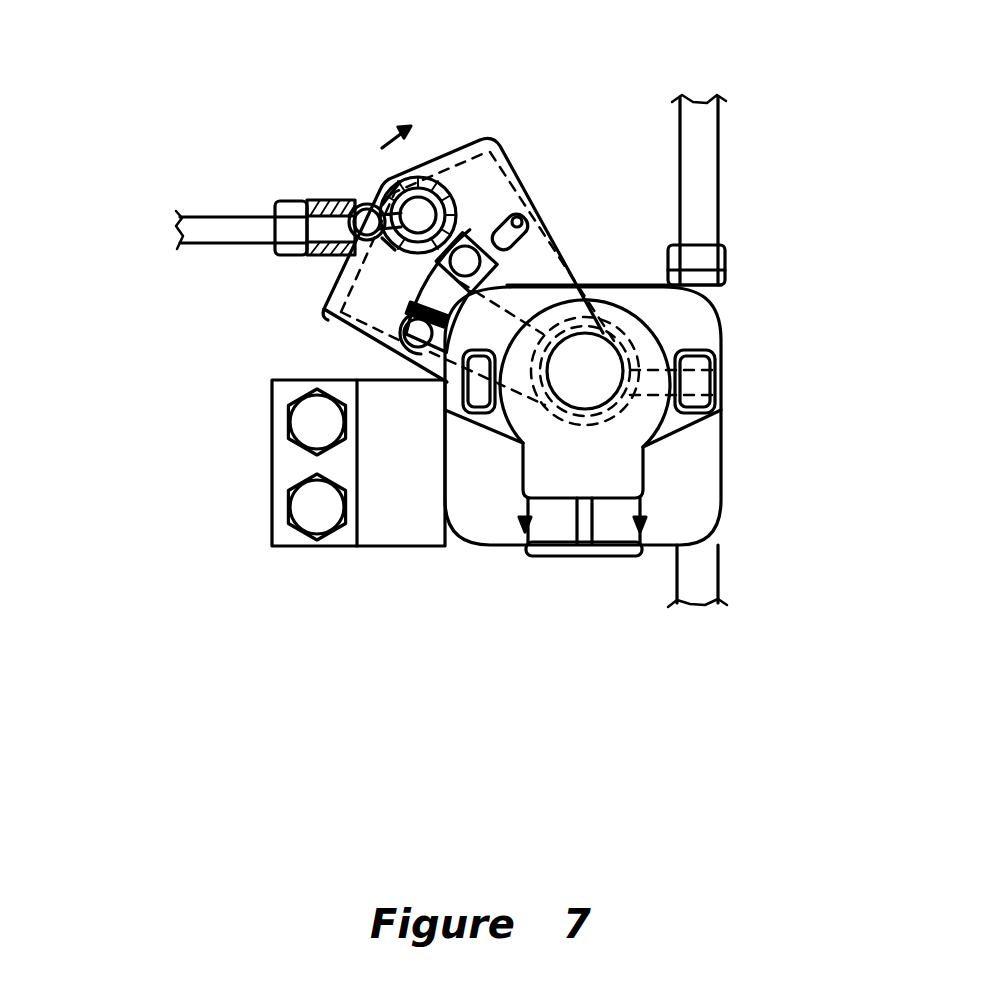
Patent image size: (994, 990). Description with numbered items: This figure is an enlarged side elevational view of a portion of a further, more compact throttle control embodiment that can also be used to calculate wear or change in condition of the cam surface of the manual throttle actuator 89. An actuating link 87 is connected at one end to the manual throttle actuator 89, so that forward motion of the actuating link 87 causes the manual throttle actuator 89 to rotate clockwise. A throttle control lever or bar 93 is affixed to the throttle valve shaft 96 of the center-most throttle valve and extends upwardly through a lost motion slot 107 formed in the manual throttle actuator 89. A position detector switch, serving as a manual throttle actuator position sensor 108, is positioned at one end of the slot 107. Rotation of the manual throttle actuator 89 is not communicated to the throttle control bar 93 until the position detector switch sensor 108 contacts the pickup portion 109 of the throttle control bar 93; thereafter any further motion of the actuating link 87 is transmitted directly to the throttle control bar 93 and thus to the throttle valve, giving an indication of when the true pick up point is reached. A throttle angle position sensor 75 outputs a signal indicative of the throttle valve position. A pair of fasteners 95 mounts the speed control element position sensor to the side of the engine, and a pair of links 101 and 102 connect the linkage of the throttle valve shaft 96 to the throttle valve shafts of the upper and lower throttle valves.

The throttle angle position sensor 75 is at (548, 482).
The actuating link 87 is at (222, 212).
The manual throttle actuator 89 is at (453, 145).
The throttle control lever 93 is at (553, 264).
The fasteners 95 is at (310, 418).
The throttle valve shaft 96 is at (593, 370).
The link 101 is at (718, 197).
The link 102 is at (717, 580).
The lost motion slot 107 is at (505, 242).
The position detector switch 108 is at (410, 352).
The pickup portion 109 is at (492, 205).